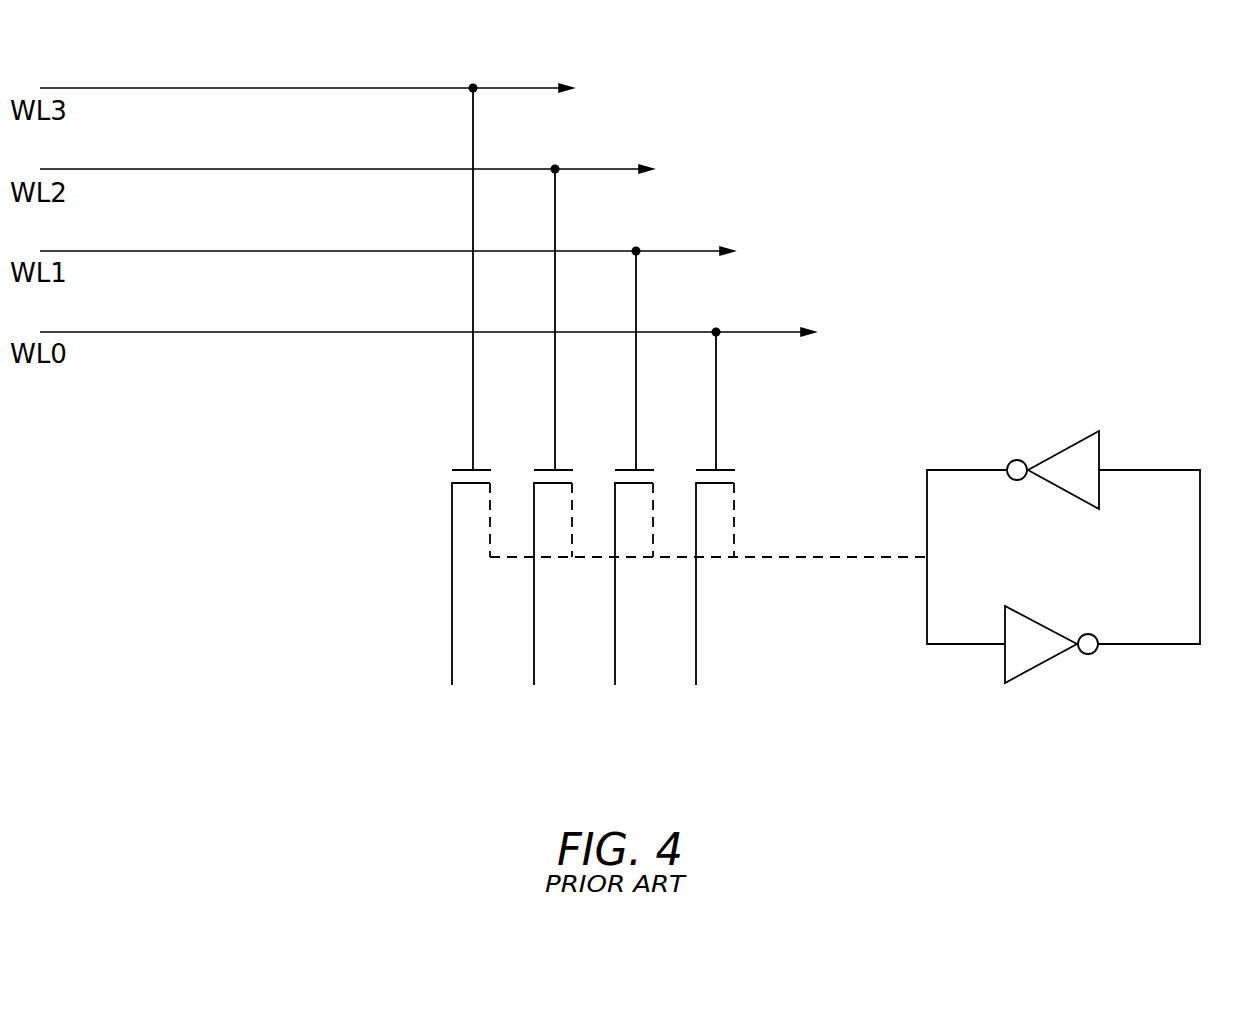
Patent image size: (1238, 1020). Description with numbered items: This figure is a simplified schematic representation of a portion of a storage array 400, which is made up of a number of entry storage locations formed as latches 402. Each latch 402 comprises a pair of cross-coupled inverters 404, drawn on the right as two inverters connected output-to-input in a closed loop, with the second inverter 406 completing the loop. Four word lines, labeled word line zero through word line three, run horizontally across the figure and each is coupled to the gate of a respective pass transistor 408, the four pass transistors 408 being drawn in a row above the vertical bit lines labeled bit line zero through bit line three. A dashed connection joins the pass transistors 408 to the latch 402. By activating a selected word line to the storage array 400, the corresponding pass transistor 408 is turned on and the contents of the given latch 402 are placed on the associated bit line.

The storage array 400 is at (811, 681).
The latch 402 is at (1150, 442).
The cross-coupled inverter 404 is at (1076, 443).
The inverter 406 is at (1028, 672).
The pass transistor 408 is at (484, 466).